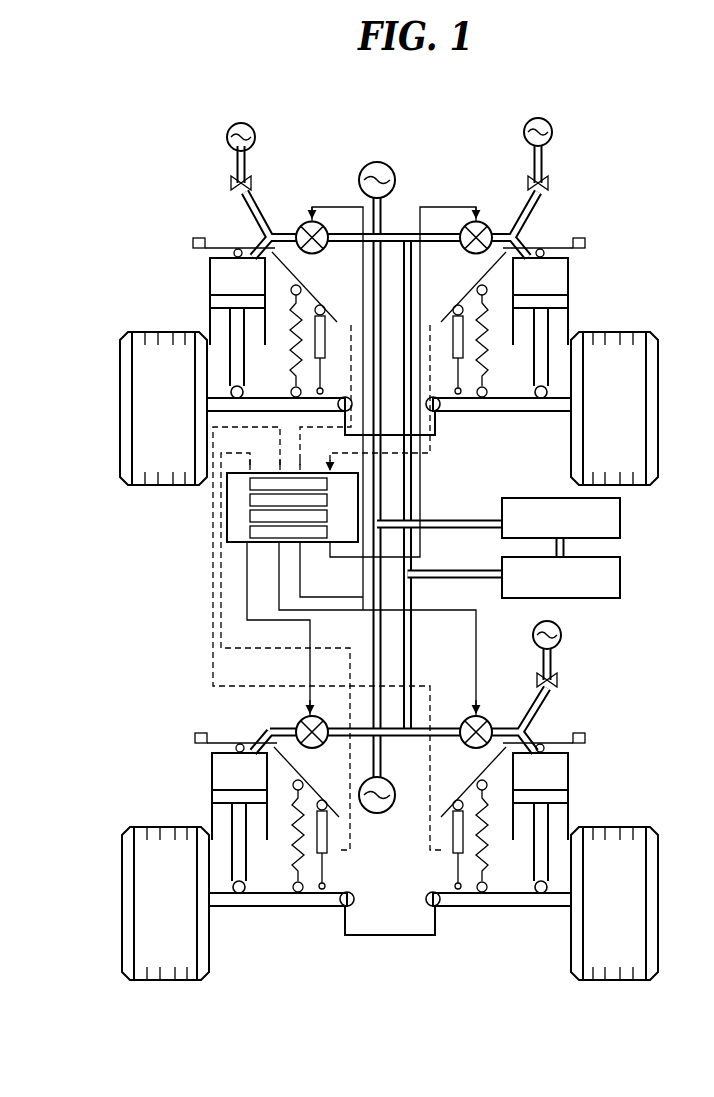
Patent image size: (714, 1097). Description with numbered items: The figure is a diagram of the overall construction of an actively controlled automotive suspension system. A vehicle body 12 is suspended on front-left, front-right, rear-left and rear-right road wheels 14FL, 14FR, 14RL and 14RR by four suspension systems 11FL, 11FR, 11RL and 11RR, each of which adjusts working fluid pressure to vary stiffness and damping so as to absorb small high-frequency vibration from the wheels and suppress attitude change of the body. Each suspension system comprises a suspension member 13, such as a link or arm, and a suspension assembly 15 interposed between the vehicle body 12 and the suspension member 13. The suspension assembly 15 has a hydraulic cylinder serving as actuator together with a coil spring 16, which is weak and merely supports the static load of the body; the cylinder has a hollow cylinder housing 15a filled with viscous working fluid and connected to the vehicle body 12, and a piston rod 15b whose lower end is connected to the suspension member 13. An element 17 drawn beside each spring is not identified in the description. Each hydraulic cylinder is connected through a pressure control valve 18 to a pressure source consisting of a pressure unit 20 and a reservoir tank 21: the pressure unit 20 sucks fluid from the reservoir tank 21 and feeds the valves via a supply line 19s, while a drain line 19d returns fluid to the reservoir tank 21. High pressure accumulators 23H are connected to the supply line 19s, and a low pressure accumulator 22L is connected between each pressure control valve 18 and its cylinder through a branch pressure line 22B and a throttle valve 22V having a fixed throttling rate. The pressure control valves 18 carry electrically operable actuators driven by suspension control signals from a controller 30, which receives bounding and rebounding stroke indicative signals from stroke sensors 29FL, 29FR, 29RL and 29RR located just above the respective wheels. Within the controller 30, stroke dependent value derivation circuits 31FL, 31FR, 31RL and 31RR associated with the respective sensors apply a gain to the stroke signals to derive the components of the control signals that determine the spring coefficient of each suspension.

The rear-right suspension system 11RR is at (188, 280).
The rear-left suspension system 11RL is at (582, 280).
The front-right suspension system 11FR is at (188, 783).
The front-left suspension system 11FL is at (582, 783).
The vehicle body 12 is at (438, 437).
The suspension member 13 is at (258, 404).
The rear-right road wheel 14RR is at (130, 356).
The rear-left road wheel 14RL is at (622, 329).
The front-right road wheel 14FR is at (130, 882).
The front-left road wheel 14FL is at (598, 978).
The suspension assembly 15 is at (210, 318).
The cylinder housing 15a is at (236, 249).
The piston rod 15b is at (543, 398).
The coil spring 16 is at (292, 340).
The shock absorber / displacement sensor 17 is at (322, 306).
The pressure control valve 18 is at (304, 222).
The supply line 19s is at (372, 622).
The drain line 19d is at (413, 640).
The pressure unit 20 is at (524, 497).
The reservoir tank 21 is at (500, 563).
The low pressure accumulator 22L is at (252, 129).
The throttle valve 22V is at (232, 179).
The branch pressure line 22B is at (255, 208).
The high pressure accumulator 23H is at (368, 166).
The rear-right bounding and rebounding stroke sensor 29RR is at (193, 243).
The rear-left bounding and rebounding stroke sensor 29RL is at (586, 243).
The front-right bounding and rebounding stroke sensor 29FR is at (196, 738).
The front-left bounding and rebounding stroke sensor 29FL is at (590, 737).
The controller 30 is at (228, 545).
The front-left bounding and rebounding stroke dependent value derivation circuit 31FL is at (256, 485).
The front-right bounding and rebounding stroke dependent value derivation circuit 31FR is at (256, 500).
The rear-left bounding and rebounding stroke dependent value derivation circuit 31RL is at (256, 516).
The rear-right bounding and rebounding stroke dependent value derivation circuit 31RR is at (310, 530).